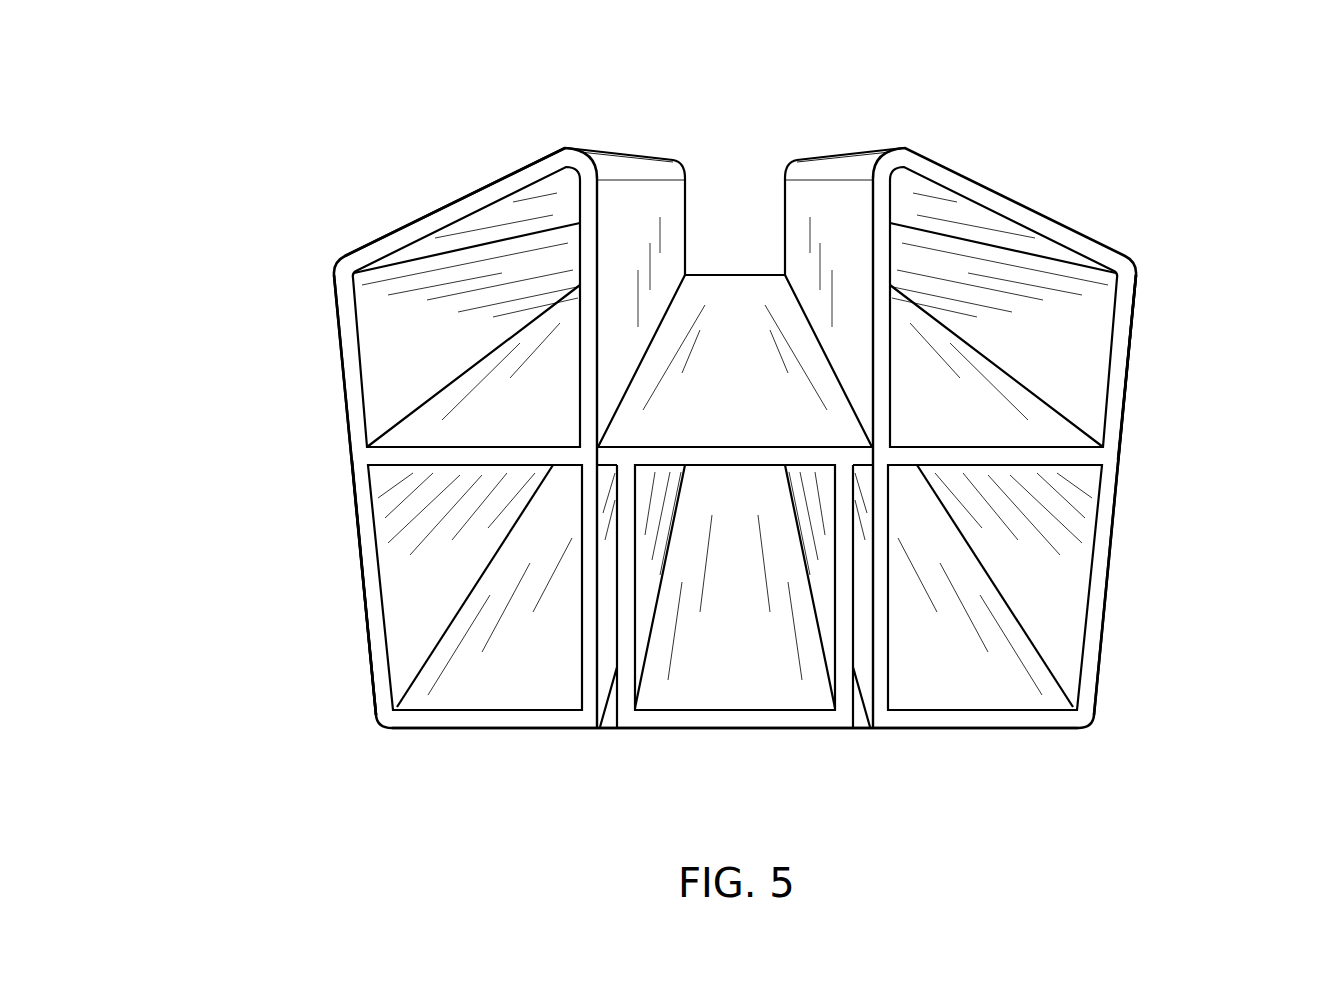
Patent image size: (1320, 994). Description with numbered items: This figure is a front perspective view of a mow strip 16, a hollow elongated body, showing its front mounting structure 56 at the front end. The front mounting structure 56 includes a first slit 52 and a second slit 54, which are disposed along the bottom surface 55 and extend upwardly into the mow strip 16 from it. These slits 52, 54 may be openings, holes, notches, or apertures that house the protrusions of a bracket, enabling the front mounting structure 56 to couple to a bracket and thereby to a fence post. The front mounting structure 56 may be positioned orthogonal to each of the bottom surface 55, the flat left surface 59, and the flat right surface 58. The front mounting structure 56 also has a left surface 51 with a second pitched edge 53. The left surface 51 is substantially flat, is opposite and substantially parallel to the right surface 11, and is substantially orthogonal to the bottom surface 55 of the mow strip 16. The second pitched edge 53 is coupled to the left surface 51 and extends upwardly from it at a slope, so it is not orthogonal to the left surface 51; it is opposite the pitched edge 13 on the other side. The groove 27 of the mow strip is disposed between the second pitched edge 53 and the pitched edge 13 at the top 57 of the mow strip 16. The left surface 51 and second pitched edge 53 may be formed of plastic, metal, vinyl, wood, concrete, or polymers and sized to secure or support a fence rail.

The right surface 11 is at (343, 380).
The pitched edge 13 is at (417, 217).
The mow strip 16 is at (923, 101).
The groove 27 is at (757, 402).
The left surface 51 is at (1122, 452).
The first slit 52 is at (600, 583).
The second pitched edge 53 is at (987, 180).
The second slit 54 is at (873, 592).
The bottom surface 55 is at (676, 759).
The front mounting structure 56 is at (250, 246).
The top 57 is at (732, 142).
The flat right surface 58 is at (207, 478).
The flat left surface 59 is at (1193, 342).